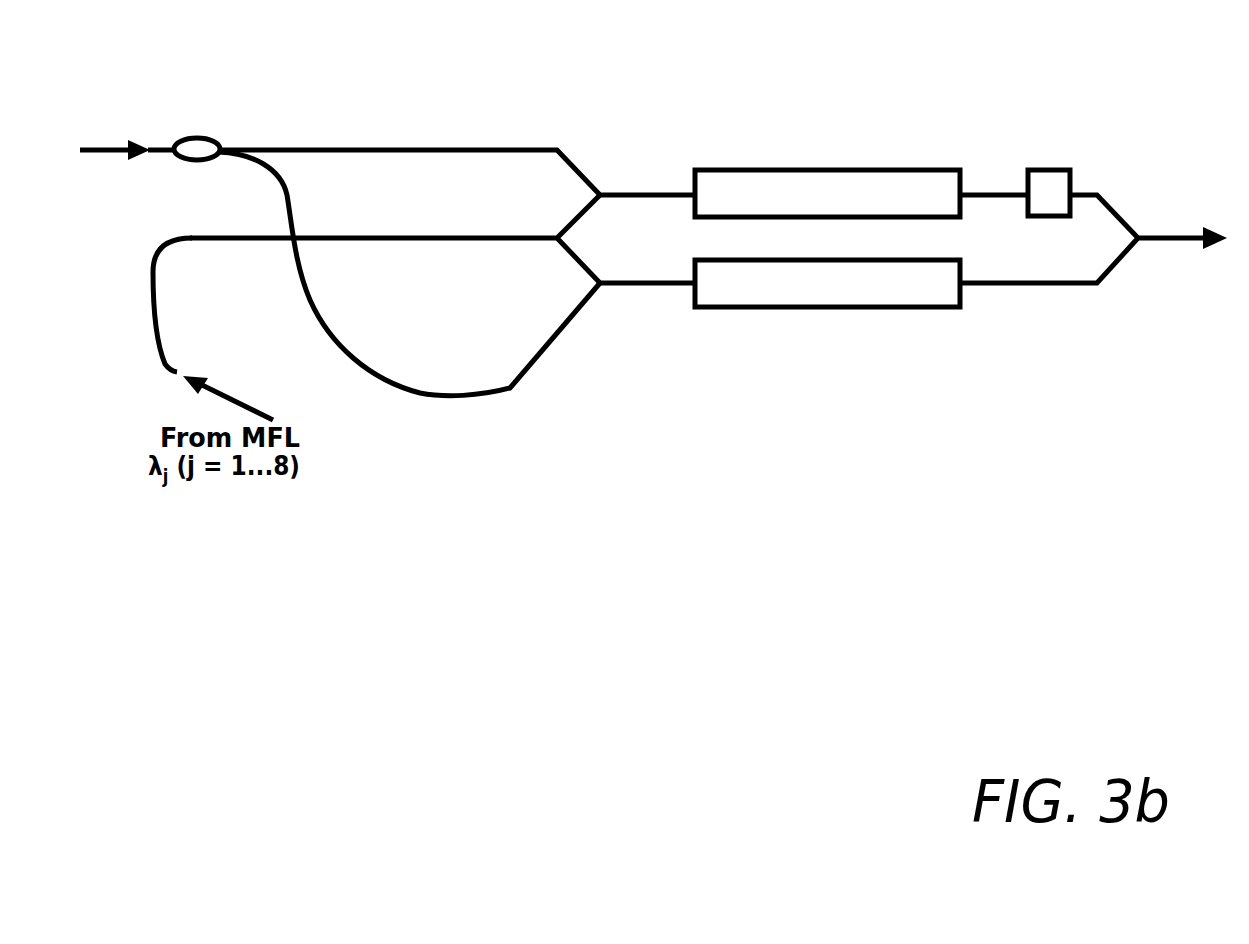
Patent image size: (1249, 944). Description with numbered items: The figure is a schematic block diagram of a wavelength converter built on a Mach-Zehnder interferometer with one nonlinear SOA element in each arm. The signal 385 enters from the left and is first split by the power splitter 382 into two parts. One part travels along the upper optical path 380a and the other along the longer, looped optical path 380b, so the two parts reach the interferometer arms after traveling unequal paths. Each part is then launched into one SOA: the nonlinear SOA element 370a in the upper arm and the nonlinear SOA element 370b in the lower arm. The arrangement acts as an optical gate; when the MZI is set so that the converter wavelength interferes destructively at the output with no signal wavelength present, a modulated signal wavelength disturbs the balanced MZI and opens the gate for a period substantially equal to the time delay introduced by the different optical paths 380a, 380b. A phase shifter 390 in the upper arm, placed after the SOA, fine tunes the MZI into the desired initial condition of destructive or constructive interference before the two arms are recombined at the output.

The signal 385 is at (84, 148).
The power splitter 382 is at (198, 138).
The optical path 380a is at (422, 148).
The optical path 380b is at (462, 396).
The nonlinear SOA element 370a is at (825, 170).
The nonlinear SOA element 370b is at (818, 307).
The phase shifter 390 is at (1048, 170).